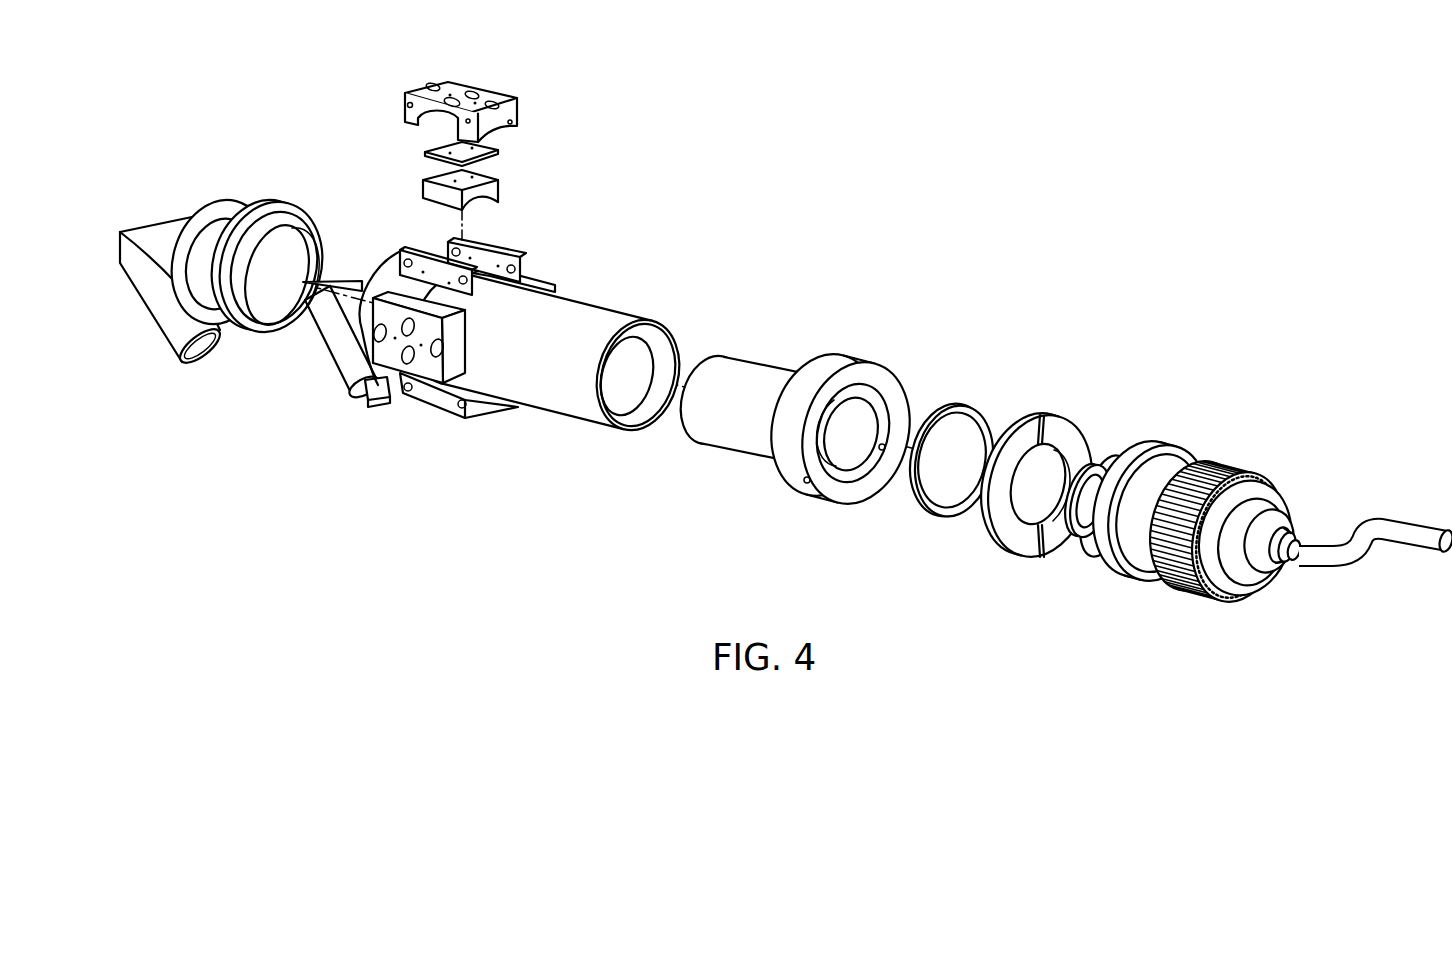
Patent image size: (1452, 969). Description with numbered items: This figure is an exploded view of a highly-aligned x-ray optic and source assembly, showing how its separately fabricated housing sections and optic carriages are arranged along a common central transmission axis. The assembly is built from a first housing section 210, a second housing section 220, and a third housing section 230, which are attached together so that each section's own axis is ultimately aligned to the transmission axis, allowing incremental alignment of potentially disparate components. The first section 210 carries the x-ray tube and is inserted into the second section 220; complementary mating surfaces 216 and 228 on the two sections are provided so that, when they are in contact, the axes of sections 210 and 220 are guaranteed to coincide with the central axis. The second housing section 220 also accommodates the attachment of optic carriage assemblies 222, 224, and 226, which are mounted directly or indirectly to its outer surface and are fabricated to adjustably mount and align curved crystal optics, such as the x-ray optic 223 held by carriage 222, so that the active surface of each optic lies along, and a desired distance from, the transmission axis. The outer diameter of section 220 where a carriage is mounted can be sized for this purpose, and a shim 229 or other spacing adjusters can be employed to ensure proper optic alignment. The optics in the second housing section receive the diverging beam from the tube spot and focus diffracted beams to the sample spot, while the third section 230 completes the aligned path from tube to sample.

The first housing section 210 is at (835, 402).
The mating surface 216 is at (803, 378).
The second housing section 220 is at (594, 312).
The optic carriage assembly 222 is at (518, 107).
The x-ray optic 223 is at (498, 188).
The optic carriage assembly 224 is at (488, 412).
The optic carriage assembly 226 is at (425, 368).
The mating surface 228 is at (633, 413).
The shim 229 is at (498, 150).
The third housing section 230 is at (273, 214).